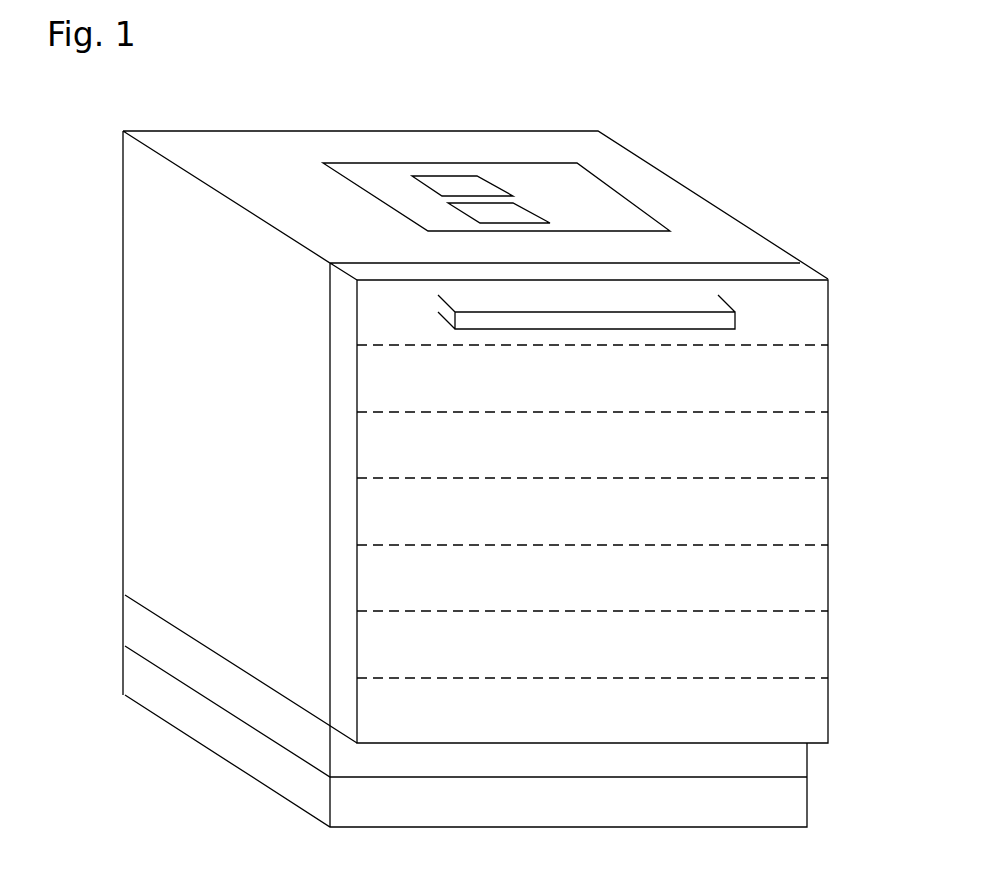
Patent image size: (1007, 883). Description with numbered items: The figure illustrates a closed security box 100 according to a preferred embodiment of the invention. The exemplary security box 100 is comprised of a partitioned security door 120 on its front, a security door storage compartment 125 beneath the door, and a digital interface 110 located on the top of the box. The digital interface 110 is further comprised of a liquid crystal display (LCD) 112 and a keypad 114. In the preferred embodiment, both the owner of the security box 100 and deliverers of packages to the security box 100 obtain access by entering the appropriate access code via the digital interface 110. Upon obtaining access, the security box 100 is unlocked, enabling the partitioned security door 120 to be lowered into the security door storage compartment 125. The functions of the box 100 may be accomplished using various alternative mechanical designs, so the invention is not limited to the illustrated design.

The security box 100 is at (122, 246).
The digital interface 110 is at (448, 163).
The liquid crystal display (LCD) 112 is at (480, 180).
The keypad 114 is at (513, 213).
The partitioned security door 120 is at (803, 494).
The security door storage compartment 125 is at (770, 759).